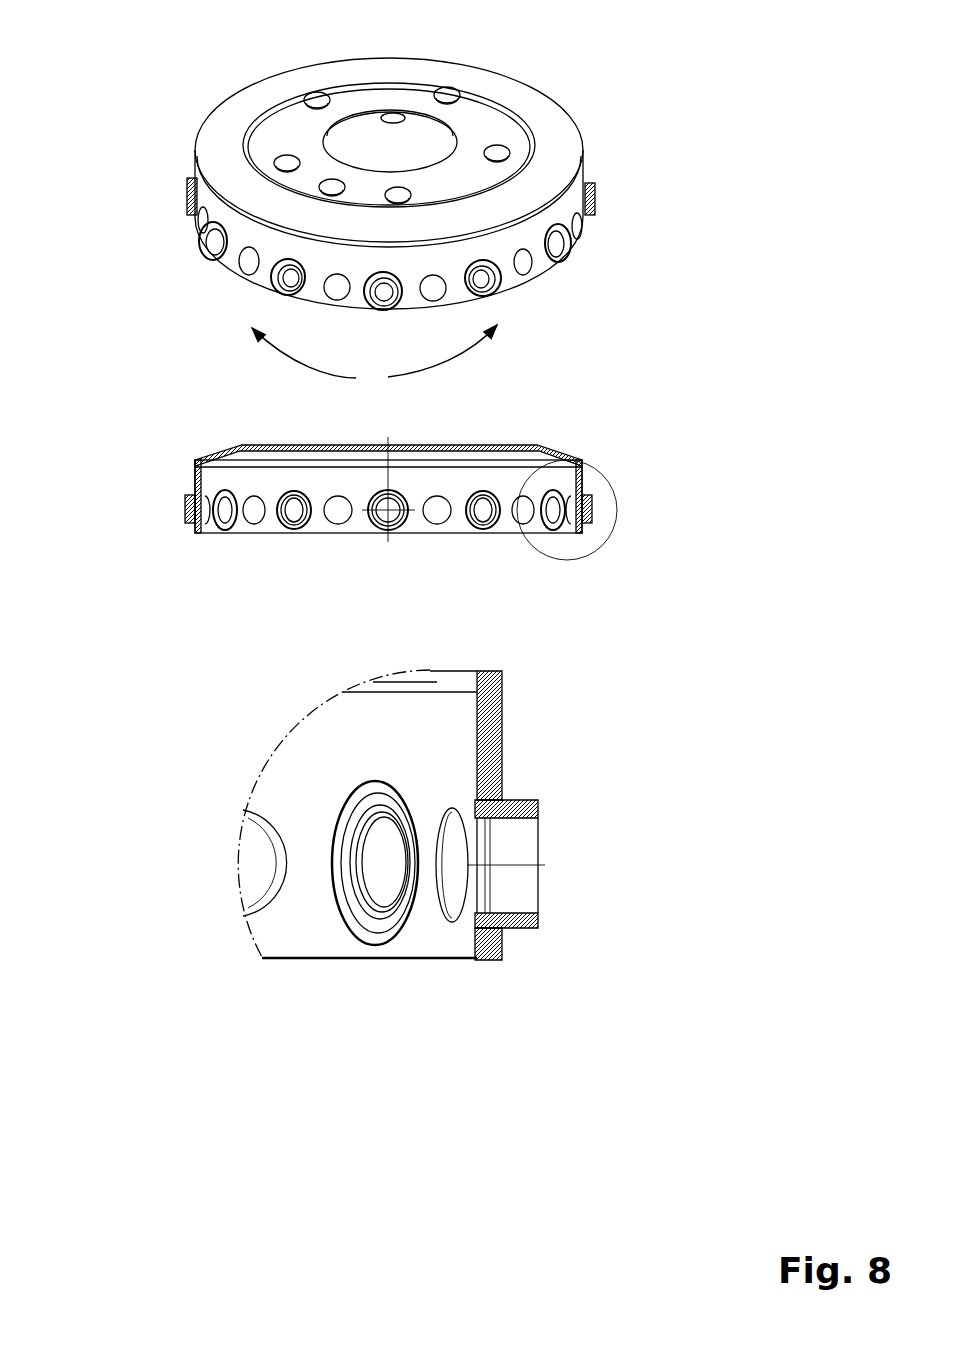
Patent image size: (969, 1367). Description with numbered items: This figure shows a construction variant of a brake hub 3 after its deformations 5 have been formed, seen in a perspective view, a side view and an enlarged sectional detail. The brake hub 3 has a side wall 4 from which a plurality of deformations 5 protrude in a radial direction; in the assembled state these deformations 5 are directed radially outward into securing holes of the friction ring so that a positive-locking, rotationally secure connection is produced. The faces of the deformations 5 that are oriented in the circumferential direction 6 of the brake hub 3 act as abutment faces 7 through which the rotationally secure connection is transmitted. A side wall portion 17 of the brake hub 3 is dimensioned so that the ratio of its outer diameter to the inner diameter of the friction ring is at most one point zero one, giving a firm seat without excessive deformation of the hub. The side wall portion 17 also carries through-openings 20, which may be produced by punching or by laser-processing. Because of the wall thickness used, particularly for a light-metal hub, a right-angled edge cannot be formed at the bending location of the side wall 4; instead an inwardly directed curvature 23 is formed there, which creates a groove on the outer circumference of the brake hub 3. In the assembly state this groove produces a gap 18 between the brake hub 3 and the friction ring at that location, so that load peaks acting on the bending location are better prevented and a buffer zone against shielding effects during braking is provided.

The brake hub 3 is at (227, 130).
The side wall 4 is at (205, 196).
The deformation 5 is at (213, 245).
The circumferential direction 6 is at (374, 351).
The abutment face 7 is at (299, 258).
The side wall portion 17 is at (575, 200).
The gap 18 is at (503, 797).
The through-opening 20 is at (337, 517).
The curvature 23 is at (500, 933).